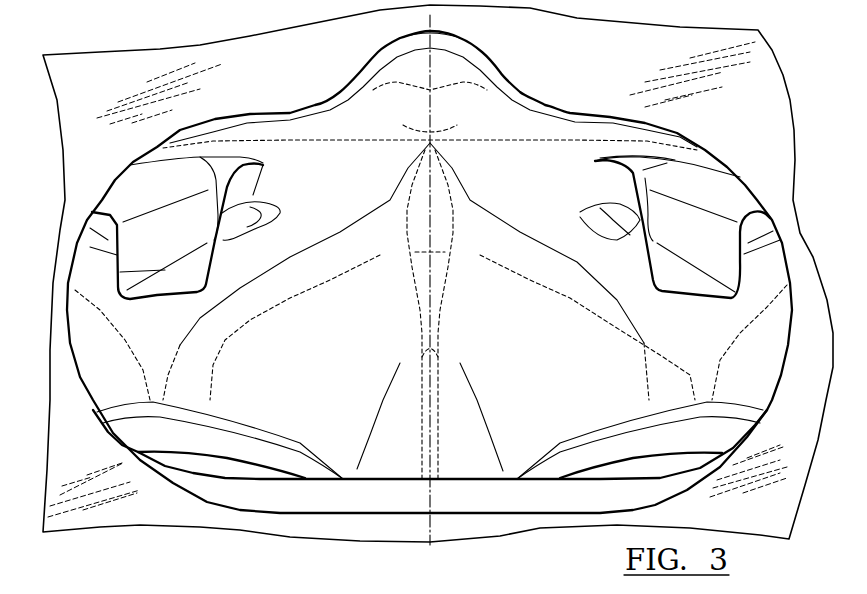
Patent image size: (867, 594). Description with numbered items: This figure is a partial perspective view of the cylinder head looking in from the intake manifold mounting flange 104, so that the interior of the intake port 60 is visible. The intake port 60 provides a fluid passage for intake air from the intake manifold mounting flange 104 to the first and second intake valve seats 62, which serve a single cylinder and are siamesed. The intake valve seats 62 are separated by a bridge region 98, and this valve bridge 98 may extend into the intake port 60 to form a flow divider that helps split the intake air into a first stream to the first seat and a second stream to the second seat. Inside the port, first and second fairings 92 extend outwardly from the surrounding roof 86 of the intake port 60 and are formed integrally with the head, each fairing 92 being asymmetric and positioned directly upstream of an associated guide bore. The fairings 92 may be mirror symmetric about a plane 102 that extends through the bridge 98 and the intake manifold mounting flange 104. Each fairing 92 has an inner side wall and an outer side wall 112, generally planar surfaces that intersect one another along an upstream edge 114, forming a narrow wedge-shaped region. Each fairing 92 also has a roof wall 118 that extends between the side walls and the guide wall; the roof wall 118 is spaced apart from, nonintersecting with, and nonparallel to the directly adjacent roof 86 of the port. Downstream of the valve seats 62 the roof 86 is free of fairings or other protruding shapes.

The intake port 60 is at (527, 180).
The intake valve seats 62 is at (245, 444).
The roof 86 is at (297, 152).
The fairings 92 is at (428, 210).
The bridge region 98 is at (397, 459).
The plane 102 is at (430, 62).
The intake manifold mounting flange 104 is at (82, 469).
The outer side wall 112 is at (148, 240).
The upstream edge 114 is at (637, 183).
The roof wall 118 is at (120, 272).